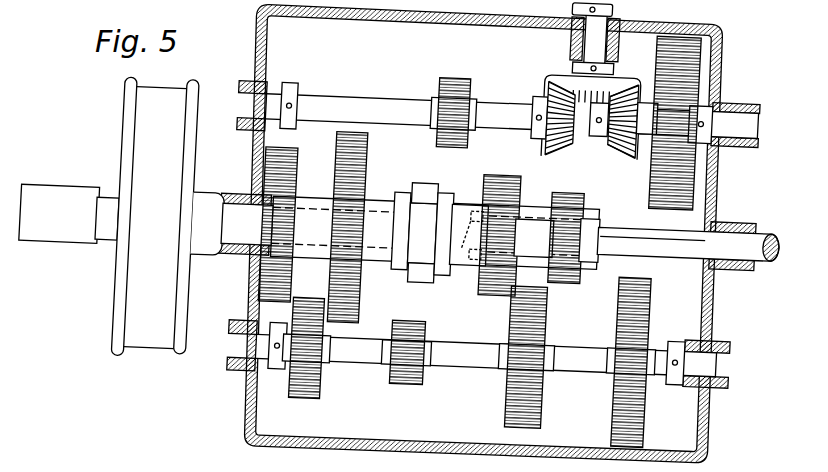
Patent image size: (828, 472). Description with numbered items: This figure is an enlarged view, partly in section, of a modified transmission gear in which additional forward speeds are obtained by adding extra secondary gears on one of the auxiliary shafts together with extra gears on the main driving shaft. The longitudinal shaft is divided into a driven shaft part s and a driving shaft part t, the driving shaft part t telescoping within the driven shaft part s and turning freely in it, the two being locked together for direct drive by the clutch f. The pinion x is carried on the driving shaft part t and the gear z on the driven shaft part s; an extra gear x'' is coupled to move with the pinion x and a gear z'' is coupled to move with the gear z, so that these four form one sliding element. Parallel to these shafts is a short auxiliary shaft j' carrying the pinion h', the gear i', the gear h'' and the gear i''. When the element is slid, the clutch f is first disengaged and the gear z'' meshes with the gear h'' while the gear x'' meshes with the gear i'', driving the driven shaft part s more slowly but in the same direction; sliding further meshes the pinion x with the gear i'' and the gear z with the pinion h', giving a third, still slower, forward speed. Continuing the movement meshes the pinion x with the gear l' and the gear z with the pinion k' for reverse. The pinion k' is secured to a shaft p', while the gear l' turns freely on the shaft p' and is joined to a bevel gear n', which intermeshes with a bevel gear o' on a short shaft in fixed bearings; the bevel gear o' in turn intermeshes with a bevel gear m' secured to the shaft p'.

The driven shaft part s is at (236, 216).
The gear z'' is at (286, 225).
The gear z is at (353, 228).
The clutch f is at (430, 187).
The shaft p' is at (512, 100).
The pinion k' is at (455, 99).
The bevel gear o' is at (592, 99).
The bevel gear m' is at (592, 131).
The bevel gear n' is at (591, 130).
The gear l' is at (667, 123).
The gear x'' is at (513, 233).
The pinion x is at (577, 234).
The driving shaft part t is at (762, 229).
The pinion h' is at (413, 345).
The gear h'' is at (315, 348).
The auxiliary shaft j' is at (485, 371).
The gear i'' is at (530, 358).
The gear i' is at (632, 362).